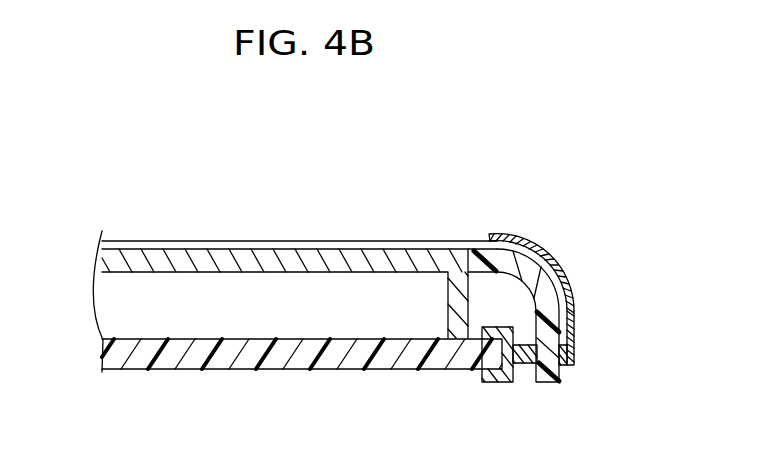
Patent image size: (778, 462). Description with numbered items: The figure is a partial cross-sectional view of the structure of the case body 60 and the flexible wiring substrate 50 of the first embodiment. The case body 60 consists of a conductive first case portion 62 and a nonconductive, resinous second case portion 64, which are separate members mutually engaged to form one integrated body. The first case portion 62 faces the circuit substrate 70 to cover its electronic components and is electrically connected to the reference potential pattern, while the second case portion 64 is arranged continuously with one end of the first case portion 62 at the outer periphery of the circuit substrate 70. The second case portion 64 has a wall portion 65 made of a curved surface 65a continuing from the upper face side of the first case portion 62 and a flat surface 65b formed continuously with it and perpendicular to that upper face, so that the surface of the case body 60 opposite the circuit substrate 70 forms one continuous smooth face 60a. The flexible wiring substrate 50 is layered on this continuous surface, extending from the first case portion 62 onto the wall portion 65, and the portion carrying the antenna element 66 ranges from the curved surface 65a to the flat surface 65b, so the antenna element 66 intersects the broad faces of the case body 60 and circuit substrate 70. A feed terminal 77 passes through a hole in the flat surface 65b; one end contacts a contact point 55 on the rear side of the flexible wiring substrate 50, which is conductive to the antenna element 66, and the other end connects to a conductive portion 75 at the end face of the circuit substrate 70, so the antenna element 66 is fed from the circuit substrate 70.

The flexible wiring substrate 50 is at (203, 250).
The case body 60 is at (299, 233).
The continuous smooth face 60a is at (428, 248).
The first case portion 62 is at (370, 260).
The second case portion 64 is at (570, 402).
The wall portion 65 is at (558, 374).
The curved surface 65a is at (522, 252).
The flat surface 65b is at (563, 333).
The antenna element 66 is at (560, 262).
The contact point 55 is at (565, 358).
The circuit substrate 70 is at (345, 370).
The conductive portion 75 is at (505, 385).
The feed terminal 77 is at (523, 365).